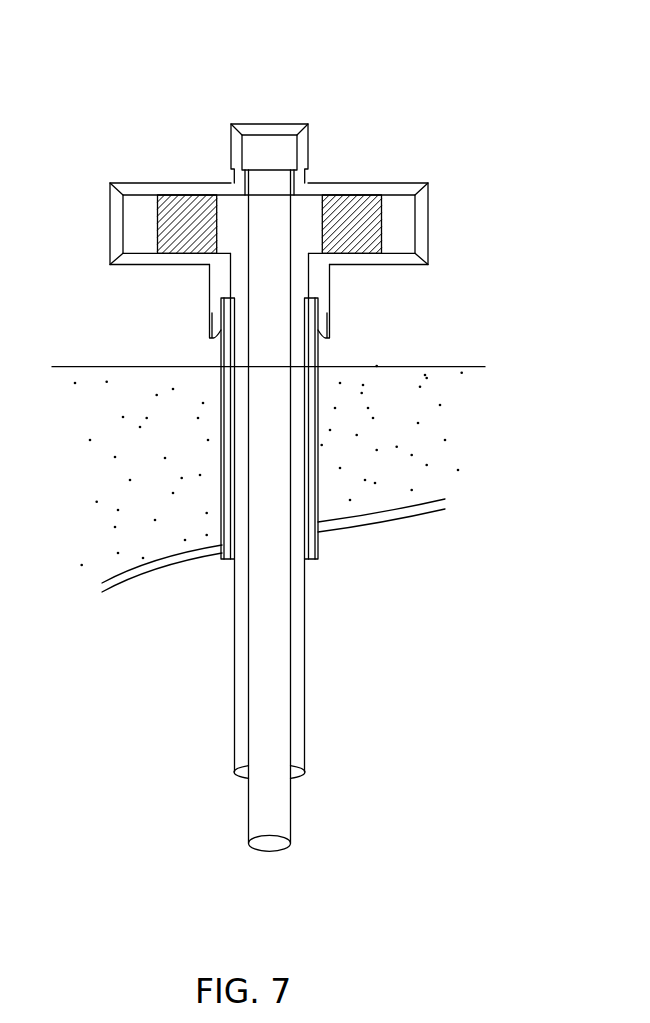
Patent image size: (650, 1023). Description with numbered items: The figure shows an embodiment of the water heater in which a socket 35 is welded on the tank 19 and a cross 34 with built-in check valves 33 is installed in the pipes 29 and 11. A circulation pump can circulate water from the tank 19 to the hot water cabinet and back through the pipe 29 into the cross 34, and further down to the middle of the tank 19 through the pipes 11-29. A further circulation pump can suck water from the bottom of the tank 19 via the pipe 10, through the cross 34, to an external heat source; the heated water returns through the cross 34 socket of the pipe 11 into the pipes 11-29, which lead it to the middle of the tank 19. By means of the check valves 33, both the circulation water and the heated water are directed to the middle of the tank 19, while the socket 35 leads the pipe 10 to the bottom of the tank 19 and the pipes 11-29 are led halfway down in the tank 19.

The pipe 10 is at (270, 123).
The pipe 11 is at (443, 220).
The tank 19 is at (389, 521).
The pipe 29 is at (96, 220).
The check valve 33 is at (197, 217).
The cross 34 is at (330, 280).
The socket 35 is at (221, 360).
The pipes 11-29 is at (305, 605).